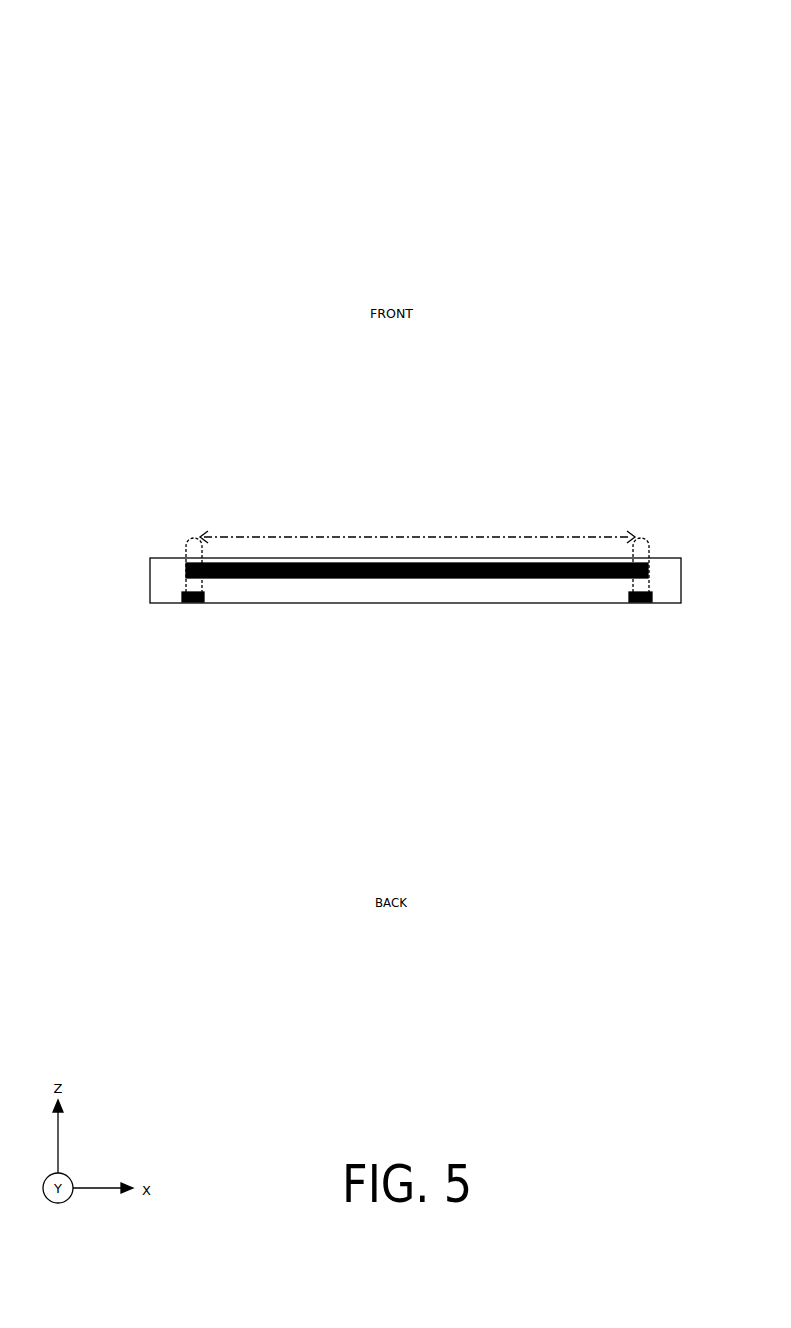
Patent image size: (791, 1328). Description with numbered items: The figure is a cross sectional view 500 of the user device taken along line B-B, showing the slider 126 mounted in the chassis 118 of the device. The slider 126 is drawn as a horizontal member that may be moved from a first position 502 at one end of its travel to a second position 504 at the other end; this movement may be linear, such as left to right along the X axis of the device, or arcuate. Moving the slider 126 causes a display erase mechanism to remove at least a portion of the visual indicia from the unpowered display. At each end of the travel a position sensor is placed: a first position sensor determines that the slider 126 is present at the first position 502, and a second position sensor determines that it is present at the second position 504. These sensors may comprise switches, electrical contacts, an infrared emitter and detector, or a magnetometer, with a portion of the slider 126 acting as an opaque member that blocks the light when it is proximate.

The cross sectional view 500 is at (648, 62).
The chassis 118 is at (353, 603).
The slider 126 is at (203, 593).
The first position 502 is at (194, 537).
The second position 504 is at (640, 535).